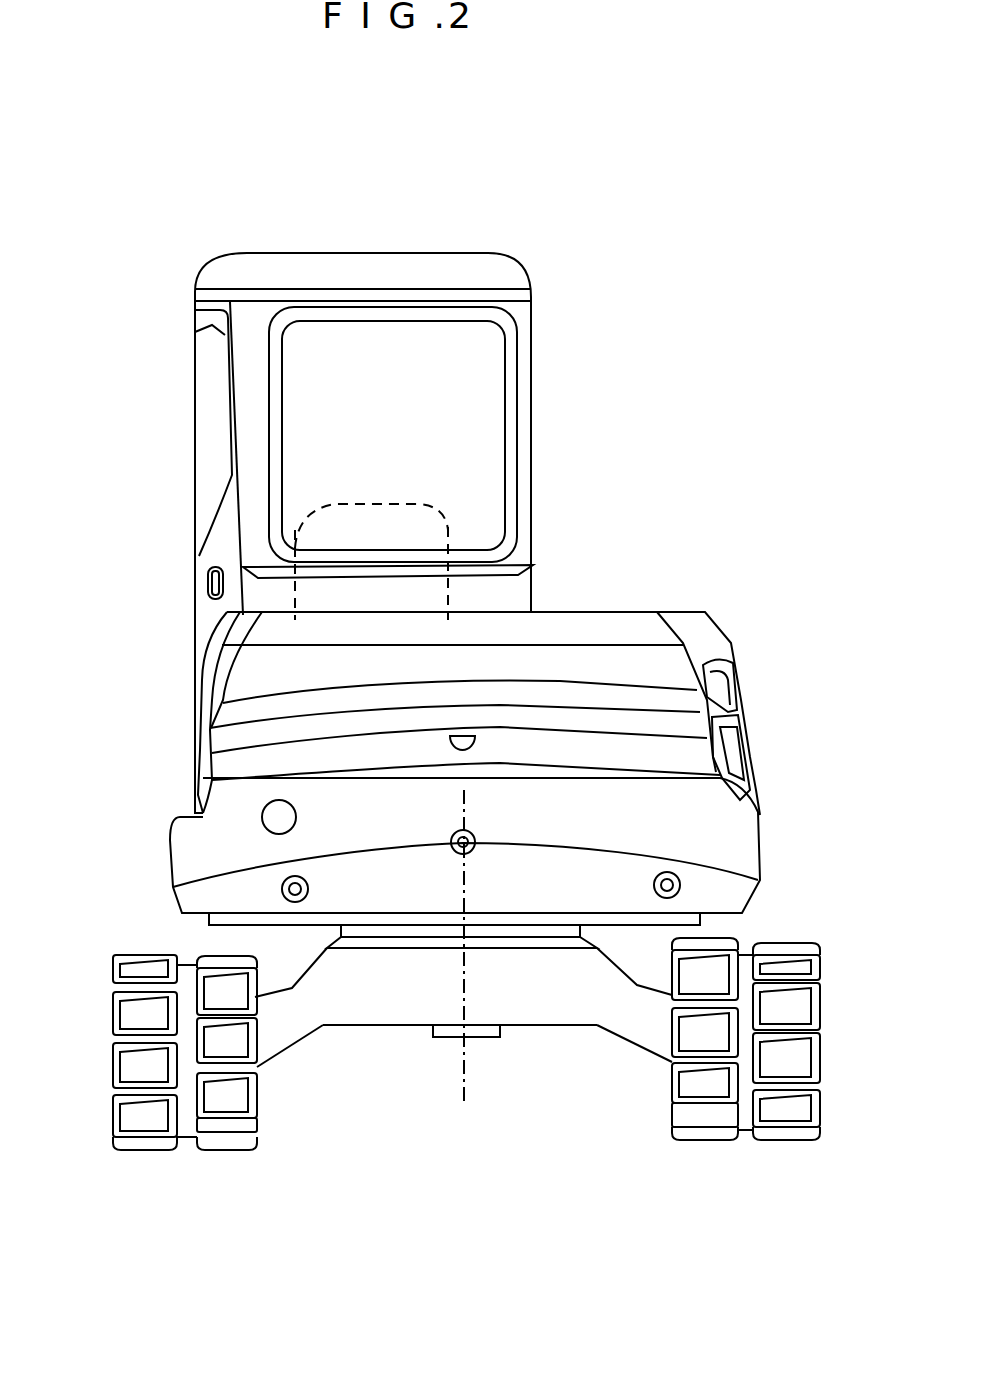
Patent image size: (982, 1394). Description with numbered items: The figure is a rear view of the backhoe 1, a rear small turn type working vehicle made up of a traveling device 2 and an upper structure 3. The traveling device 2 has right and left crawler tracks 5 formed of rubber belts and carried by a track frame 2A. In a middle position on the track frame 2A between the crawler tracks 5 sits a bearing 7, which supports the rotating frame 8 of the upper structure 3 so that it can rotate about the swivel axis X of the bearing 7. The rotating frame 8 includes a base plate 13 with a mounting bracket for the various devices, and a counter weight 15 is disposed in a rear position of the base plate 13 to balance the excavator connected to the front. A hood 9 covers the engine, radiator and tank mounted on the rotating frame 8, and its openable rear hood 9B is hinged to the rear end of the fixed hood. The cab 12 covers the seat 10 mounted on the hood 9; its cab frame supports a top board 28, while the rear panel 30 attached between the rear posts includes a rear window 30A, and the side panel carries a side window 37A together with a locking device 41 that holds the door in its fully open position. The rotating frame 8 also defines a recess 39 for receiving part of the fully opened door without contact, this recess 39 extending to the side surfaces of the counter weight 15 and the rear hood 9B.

The backhoe 1 is at (703, 177).
The traveling device 2 is at (430, 1003).
The track frame 2A is at (380, 1005).
The upper structure 3 is at (752, 612).
The crawler tracks 5 is at (113, 1048).
The bearing 7 is at (535, 927).
The rotating frame 8 is at (168, 833).
The hood 9 is at (628, 612).
The rear hood 9B is at (675, 662).
The seat 10 is at (443, 523).
The cab 12 is at (460, 237).
The base plate 13 is at (637, 987).
The counter weight 15 is at (720, 835).
The top board 28 is at (342, 270).
The rear panel 30 is at (525, 410).
The rear window 30A is at (497, 348).
The side window 37A is at (213, 438).
The recess 39 is at (183, 807).
The locking device 41 is at (201, 573).